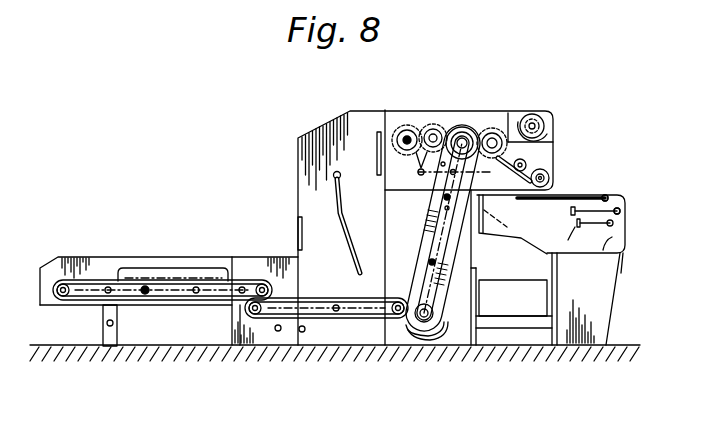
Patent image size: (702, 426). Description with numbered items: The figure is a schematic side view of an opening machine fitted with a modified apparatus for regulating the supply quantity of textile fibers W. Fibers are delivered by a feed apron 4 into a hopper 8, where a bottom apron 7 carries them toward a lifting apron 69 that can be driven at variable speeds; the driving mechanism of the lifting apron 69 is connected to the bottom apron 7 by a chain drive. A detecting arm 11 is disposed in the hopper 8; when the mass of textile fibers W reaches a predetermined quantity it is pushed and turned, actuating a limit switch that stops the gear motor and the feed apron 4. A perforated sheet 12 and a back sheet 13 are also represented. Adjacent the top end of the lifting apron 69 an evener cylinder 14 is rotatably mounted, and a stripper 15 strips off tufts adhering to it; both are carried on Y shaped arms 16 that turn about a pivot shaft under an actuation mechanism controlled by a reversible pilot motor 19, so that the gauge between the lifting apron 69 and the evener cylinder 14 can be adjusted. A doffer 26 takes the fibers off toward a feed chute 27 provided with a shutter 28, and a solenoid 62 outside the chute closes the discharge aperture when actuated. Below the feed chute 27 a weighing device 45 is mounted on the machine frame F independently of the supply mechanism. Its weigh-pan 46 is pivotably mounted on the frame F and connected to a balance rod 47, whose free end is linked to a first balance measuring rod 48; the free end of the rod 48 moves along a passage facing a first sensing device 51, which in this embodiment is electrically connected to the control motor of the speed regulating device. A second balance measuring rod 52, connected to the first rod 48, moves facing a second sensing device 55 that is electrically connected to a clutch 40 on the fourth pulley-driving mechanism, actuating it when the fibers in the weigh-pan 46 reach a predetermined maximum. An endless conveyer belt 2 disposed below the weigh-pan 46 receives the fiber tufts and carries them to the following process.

The endless conveyer belt 2 is at (513, 328).
The feed apron 4 is at (97, 290).
The bottom apron 7 is at (310, 300).
The hopper 8 is at (374, 220).
The detecting arm 11 is at (338, 210).
The perforated sheet 12 is at (418, 338).
The back sheet 13 is at (440, 305).
The evener cylinder 14 is at (428, 124).
The stripper 15 is at (397, 130).
The Y shaped arm 16 is at (412, 174).
The pilot motor 19 is at (455, 127).
The doffer 26 is at (498, 128).
The feed chute 27 is at (525, 165).
The shutter 28 is at (527, 168).
The clutch 40 is at (531, 114).
The weighing device 45 is at (621, 255).
The weigh-pan 46 is at (497, 238).
The balance rod 47 is at (605, 195).
The first balance measuring rod 48 is at (621, 203).
The first sensing device 51 is at (571, 211).
The second balance measuring rod 52 is at (612, 242).
The second sensing device 55 is at (568, 240).
The solenoid 62 is at (552, 178).
The lifting apron 69 is at (428, 233).
The machine frame F is at (597, 343).
The textile fibers W is at (168, 268).